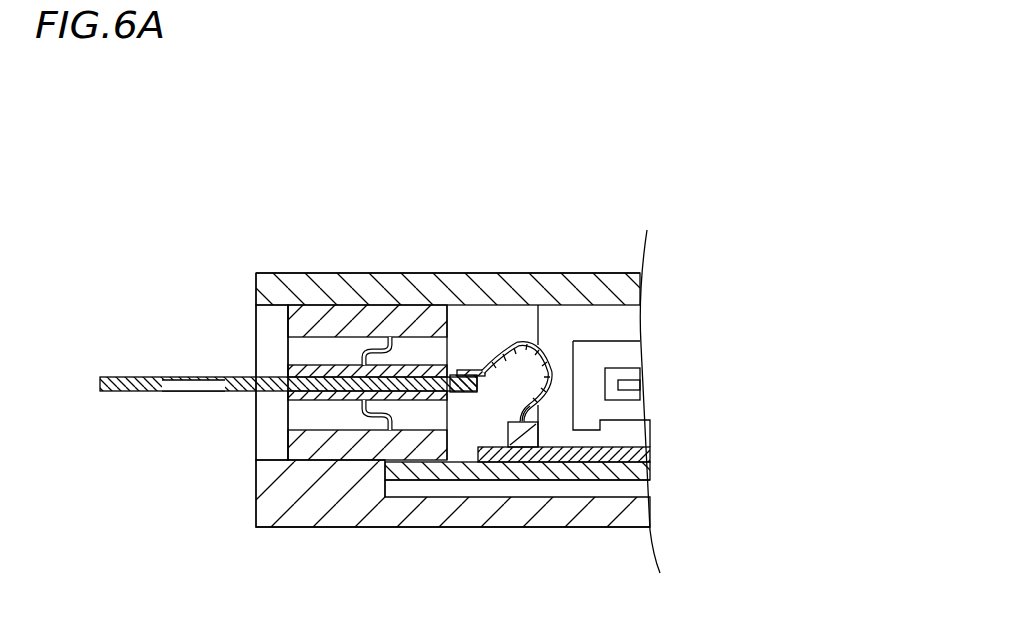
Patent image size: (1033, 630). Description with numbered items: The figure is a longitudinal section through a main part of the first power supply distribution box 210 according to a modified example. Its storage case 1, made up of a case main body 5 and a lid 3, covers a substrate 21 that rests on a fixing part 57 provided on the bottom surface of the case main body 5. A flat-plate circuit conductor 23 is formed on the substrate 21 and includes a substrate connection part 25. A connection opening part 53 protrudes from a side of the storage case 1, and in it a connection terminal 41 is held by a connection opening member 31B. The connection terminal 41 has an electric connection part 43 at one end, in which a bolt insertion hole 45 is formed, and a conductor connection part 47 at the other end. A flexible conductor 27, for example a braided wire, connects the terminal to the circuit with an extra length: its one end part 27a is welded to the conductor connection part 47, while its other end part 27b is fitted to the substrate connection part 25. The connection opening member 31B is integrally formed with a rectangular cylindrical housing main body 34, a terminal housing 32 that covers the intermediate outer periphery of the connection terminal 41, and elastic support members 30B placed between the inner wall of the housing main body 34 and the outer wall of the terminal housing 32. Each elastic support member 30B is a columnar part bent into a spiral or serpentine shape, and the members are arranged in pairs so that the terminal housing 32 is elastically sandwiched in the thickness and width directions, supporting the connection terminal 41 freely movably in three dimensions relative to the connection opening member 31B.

The storage case 1 is at (257, 233).
The lid 3 is at (593, 262).
The case main body 5 is at (246, 512).
The substrate 21 is at (583, 491).
The circuit conductor 23 is at (586, 433).
The substrate connection part 25 is at (508, 425).
The flexible conductor 27 is at (518, 330).
The one end part of the flexible conductor 27a is at (468, 375).
The other end part of the flexible conductor 27b is at (537, 416).
The elastic support member 30B is at (363, 357).
The connection opening member 31B is at (348, 293).
The terminal housing 32 is at (422, 367).
The housing main body 34 is at (323, 310).
The connection terminal 41 is at (280, 453).
The electric connection part 43 is at (130, 376).
The bolt insertion hole 45 is at (178, 377).
The conductor connection part 47 is at (462, 393).
The connection opening part 53 is at (245, 323).
The fixing part 57 is at (393, 488).
The first power supply distribution box 210 is at (571, 212).